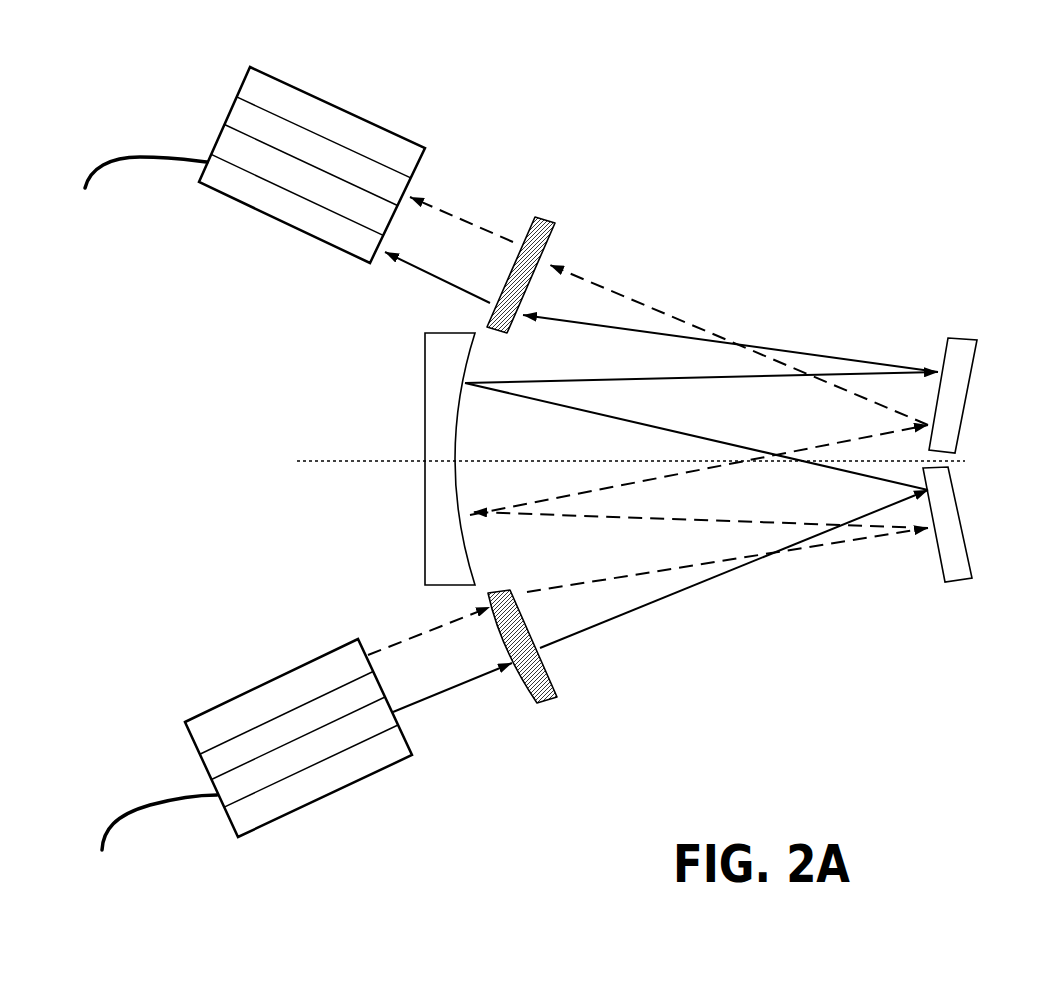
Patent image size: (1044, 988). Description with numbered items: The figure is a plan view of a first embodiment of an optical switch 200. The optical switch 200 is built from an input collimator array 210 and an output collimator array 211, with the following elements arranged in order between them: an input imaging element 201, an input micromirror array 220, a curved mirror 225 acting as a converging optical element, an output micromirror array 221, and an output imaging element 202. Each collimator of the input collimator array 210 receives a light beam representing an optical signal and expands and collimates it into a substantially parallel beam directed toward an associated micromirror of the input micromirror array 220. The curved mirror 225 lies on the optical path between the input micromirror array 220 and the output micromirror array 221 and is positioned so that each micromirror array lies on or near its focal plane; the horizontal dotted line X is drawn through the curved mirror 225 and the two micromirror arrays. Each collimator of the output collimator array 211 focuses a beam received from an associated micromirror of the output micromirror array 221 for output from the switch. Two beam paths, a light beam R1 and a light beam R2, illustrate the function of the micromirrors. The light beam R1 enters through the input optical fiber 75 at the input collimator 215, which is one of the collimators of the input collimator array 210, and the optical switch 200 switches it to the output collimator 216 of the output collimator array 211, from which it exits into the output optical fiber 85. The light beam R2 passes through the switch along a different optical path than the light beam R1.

The optical switch 200 is at (878, 192).
The input imaging element 201 is at (540, 693).
The output imaging element 202 is at (545, 212).
The input collimator array 210 is at (362, 790).
The output collimator array 211 is at (230, 230).
The input collimator 215 is at (213, 720).
The output collimator 216 is at (278, 87).
The input micromirror array 220 is at (955, 562).
The output micromirror array 221 is at (957, 358).
The curved mirror 225 is at (425, 392).
The input optical fiber 75 is at (110, 817).
The output optical fiber 85 is at (105, 157).
The light beam R1 is at (488, 222).
The light beam R2 is at (418, 277).
The optical axis X is at (375, 465).